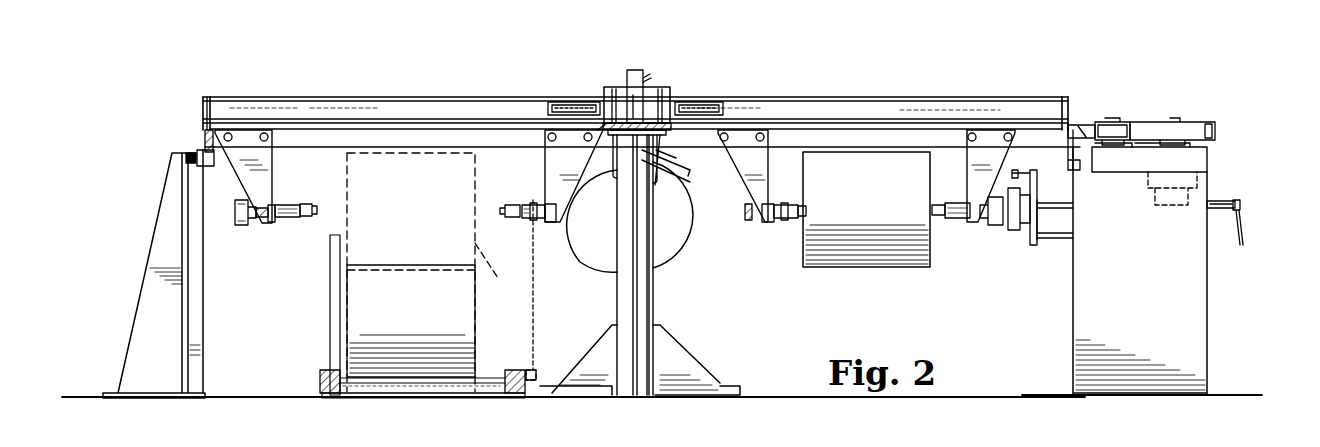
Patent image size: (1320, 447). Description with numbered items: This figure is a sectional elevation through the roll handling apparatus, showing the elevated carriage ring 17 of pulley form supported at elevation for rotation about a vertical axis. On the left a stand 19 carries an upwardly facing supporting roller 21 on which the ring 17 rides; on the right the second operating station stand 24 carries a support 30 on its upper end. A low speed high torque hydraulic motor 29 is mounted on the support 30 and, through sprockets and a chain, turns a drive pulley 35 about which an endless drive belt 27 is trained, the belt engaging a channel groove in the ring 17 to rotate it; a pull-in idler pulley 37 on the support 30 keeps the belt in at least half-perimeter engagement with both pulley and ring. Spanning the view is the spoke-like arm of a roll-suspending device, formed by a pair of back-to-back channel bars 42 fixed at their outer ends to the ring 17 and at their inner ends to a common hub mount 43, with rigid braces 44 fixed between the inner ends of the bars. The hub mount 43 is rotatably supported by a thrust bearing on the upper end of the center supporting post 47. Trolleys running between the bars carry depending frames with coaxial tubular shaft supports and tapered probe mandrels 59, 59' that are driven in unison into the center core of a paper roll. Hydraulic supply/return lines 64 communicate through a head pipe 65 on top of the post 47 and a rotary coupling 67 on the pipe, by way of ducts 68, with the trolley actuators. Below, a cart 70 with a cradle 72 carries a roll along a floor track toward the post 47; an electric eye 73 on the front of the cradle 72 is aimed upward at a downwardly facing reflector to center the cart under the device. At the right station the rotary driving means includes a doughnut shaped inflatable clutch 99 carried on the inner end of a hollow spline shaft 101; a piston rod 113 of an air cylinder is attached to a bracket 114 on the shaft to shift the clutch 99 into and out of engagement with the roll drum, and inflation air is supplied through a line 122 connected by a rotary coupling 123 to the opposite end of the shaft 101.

The carriage ring 17 is at (334, 140).
The stand 19 is at (182, 288).
The supporting roller 21 is at (205, 147).
The second operating station stand 24 is at (1195, 308).
The endless drive belt 27 is at (1086, 125).
The hydraulic motor 29 is at (1168, 205).
The support 30 is at (1208, 158).
The drive pulley 35 is at (1196, 122).
The pull-in idler pulley 37 is at (1115, 130).
The channel bar 42 is at (412, 105).
The hub mount 43 is at (672, 92).
The rigid brace 44 is at (574, 104).
The center supporting post 47 is at (658, 318).
The tapered probe mandrel 59 is at (919, 198).
The shaft end 59' is at (300, 228).
The supply/return line 64 is at (690, 172).
The head pipe 65 is at (603, 127).
The rotary coupling 67 is at (628, 85).
The duct 68 is at (650, 78).
The cart 70 is at (318, 380).
The cradle 72 is at (520, 396).
The electric eye 73 is at (536, 372).
The inflatable clutch 99 is at (1012, 232).
The spline shaft 101 is at (1218, 201).
The piston rod 113 is at (1058, 240).
The bracket 114 is at (1036, 185).
The air line 122 is at (1243, 240).
The rotary coupling 123 is at (1241, 205).